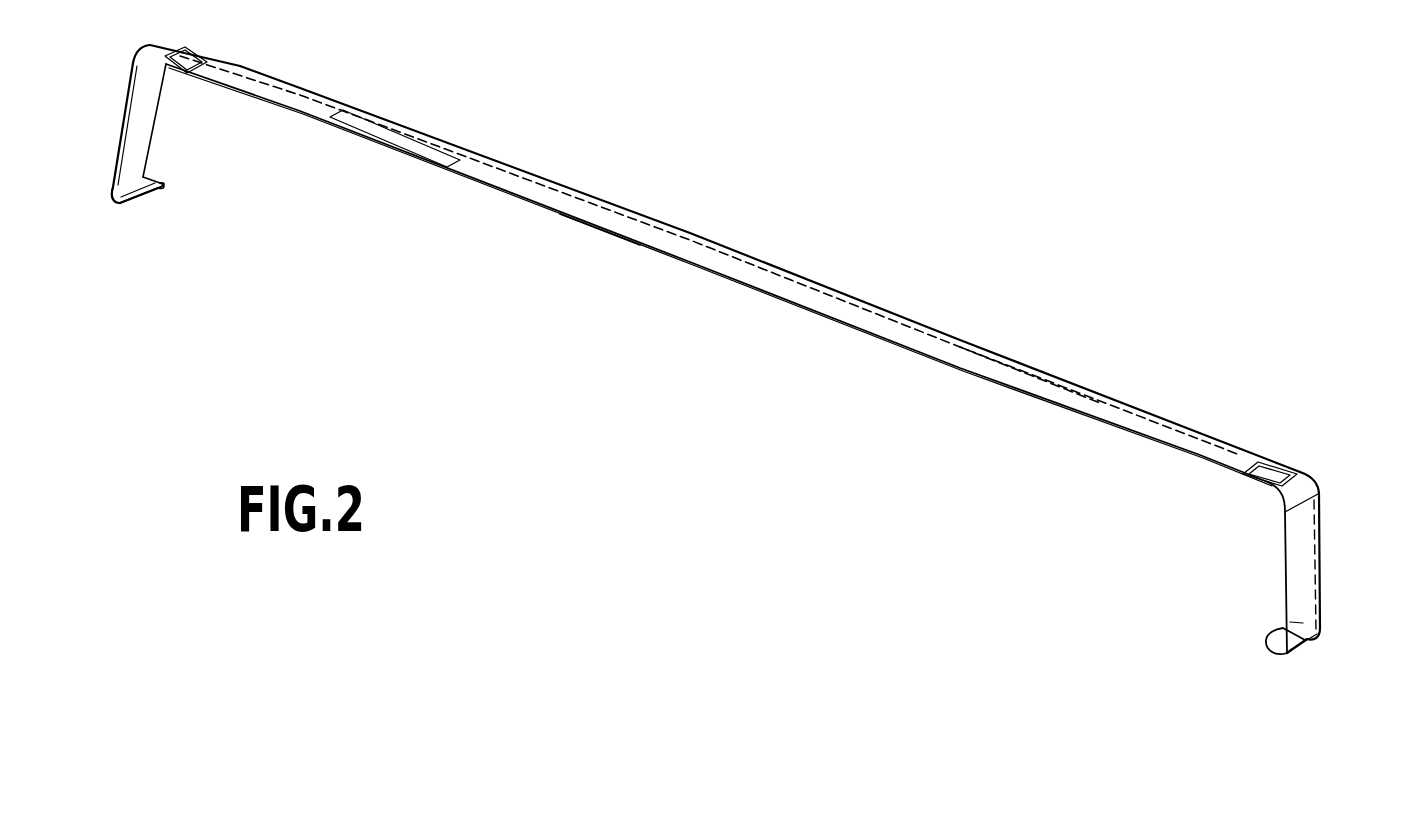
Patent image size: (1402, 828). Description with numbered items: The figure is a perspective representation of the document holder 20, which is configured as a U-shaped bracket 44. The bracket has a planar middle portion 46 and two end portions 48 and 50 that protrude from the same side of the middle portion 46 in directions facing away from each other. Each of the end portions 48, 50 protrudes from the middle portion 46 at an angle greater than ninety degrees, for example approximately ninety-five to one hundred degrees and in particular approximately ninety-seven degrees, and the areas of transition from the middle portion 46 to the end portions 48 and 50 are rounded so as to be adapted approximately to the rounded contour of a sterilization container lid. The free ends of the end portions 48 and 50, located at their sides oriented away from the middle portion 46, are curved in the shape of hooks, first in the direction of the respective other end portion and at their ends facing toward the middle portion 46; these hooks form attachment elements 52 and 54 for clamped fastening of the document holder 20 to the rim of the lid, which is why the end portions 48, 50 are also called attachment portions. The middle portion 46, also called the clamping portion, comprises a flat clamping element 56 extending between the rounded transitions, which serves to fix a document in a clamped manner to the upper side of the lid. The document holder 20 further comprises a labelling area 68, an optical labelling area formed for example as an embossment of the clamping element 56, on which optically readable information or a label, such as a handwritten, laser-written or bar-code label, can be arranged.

The document holder 20 is at (830, 218).
The U-shaped bracket 44 is at (908, 283).
The middle portion 46 is at (993, 371).
The end portion 48 is at (1308, 540).
The end portion 50 is at (134, 115).
The attachment element 52 is at (1280, 643).
The attachment element 54 is at (121, 195).
The clamping element 56 is at (617, 224).
The labelling area 68 is at (383, 136).